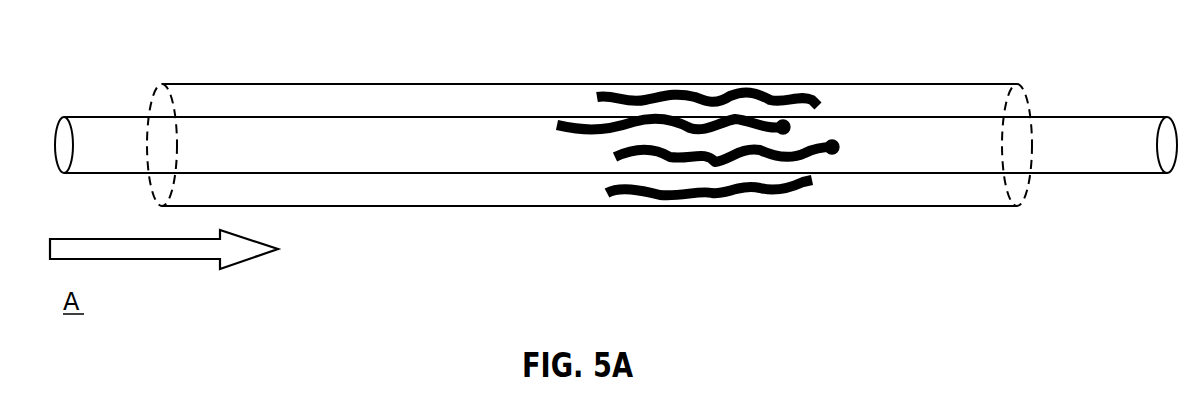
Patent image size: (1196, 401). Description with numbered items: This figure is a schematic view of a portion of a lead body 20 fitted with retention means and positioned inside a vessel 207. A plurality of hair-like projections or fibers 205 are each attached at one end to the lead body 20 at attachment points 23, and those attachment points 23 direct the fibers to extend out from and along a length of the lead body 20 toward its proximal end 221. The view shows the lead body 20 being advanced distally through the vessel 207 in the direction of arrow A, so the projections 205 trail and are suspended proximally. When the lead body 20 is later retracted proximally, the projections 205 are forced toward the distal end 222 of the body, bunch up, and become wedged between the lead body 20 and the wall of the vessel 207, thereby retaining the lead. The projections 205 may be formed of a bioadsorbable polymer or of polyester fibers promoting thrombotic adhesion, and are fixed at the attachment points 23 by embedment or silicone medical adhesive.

The lead body 20 is at (1072, 155).
The vessel 207 is at (277, 98).
The proximal end 221 is at (138, 76).
The distal end 222 is at (1064, 64).
The hair-like projections or fibers 205 is at (613, 156).
The attachment points 23 is at (832, 147).